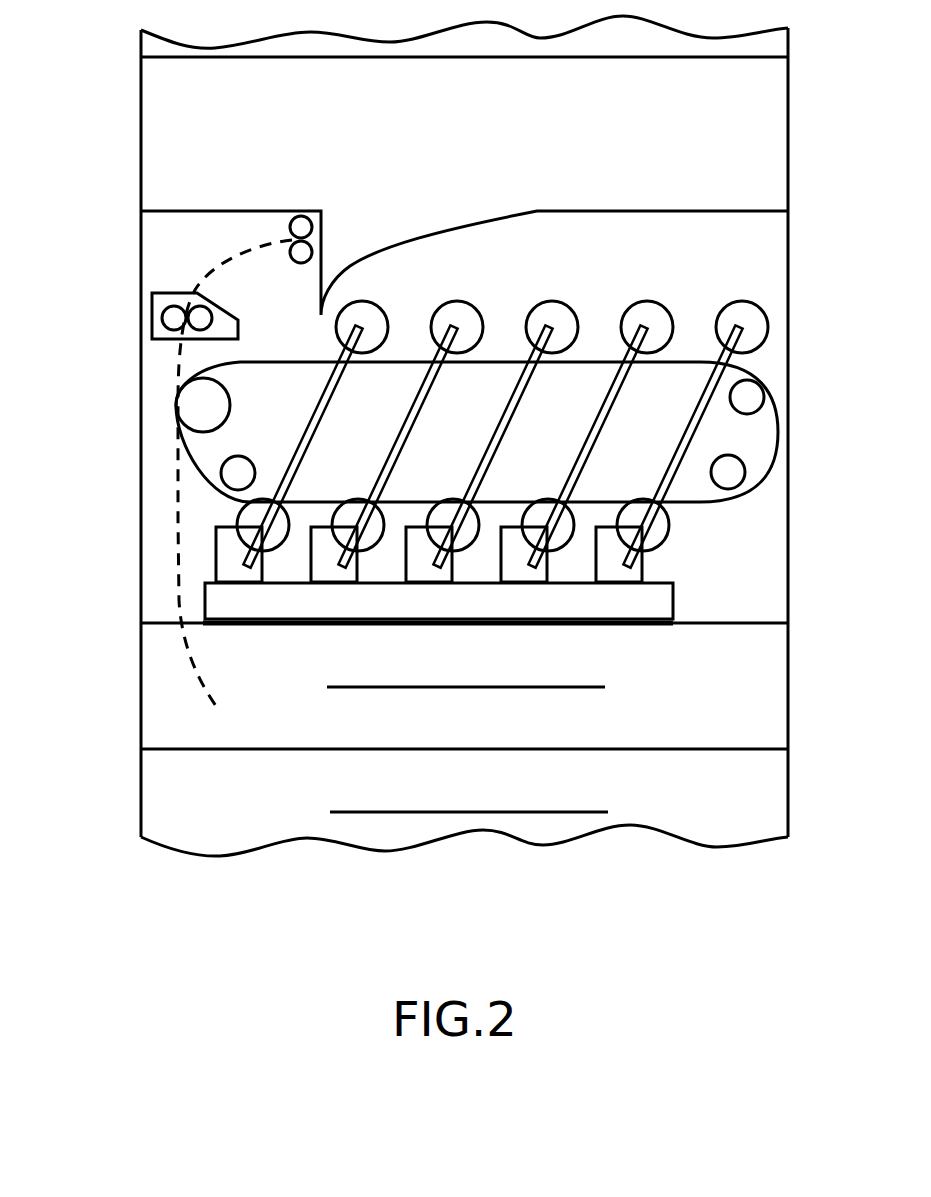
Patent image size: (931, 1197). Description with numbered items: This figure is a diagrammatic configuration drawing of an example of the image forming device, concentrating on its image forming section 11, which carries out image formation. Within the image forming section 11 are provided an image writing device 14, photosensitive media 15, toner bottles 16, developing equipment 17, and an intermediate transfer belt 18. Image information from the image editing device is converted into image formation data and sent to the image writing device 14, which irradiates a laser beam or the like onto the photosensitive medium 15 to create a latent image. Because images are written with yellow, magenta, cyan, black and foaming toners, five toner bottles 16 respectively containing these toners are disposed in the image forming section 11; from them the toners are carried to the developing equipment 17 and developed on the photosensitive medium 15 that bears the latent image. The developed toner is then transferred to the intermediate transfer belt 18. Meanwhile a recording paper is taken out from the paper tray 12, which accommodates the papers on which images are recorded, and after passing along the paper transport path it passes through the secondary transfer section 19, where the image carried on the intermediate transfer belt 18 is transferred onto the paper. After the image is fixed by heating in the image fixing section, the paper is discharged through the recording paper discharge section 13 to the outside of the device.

The image forming section 11 is at (124, 194).
The paper tray 12 is at (178, 655).
The recording paper discharge section 13 is at (323, 228).
The image writing device 14 is at (674, 607).
The photosensitive medium 15 is at (666, 534).
The toner bottle 16 is at (754, 304).
The developing equipment 17 is at (644, 575).
The intermediate transfer belt 18 is at (776, 448).
The secondary transfer section 19 is at (152, 338).